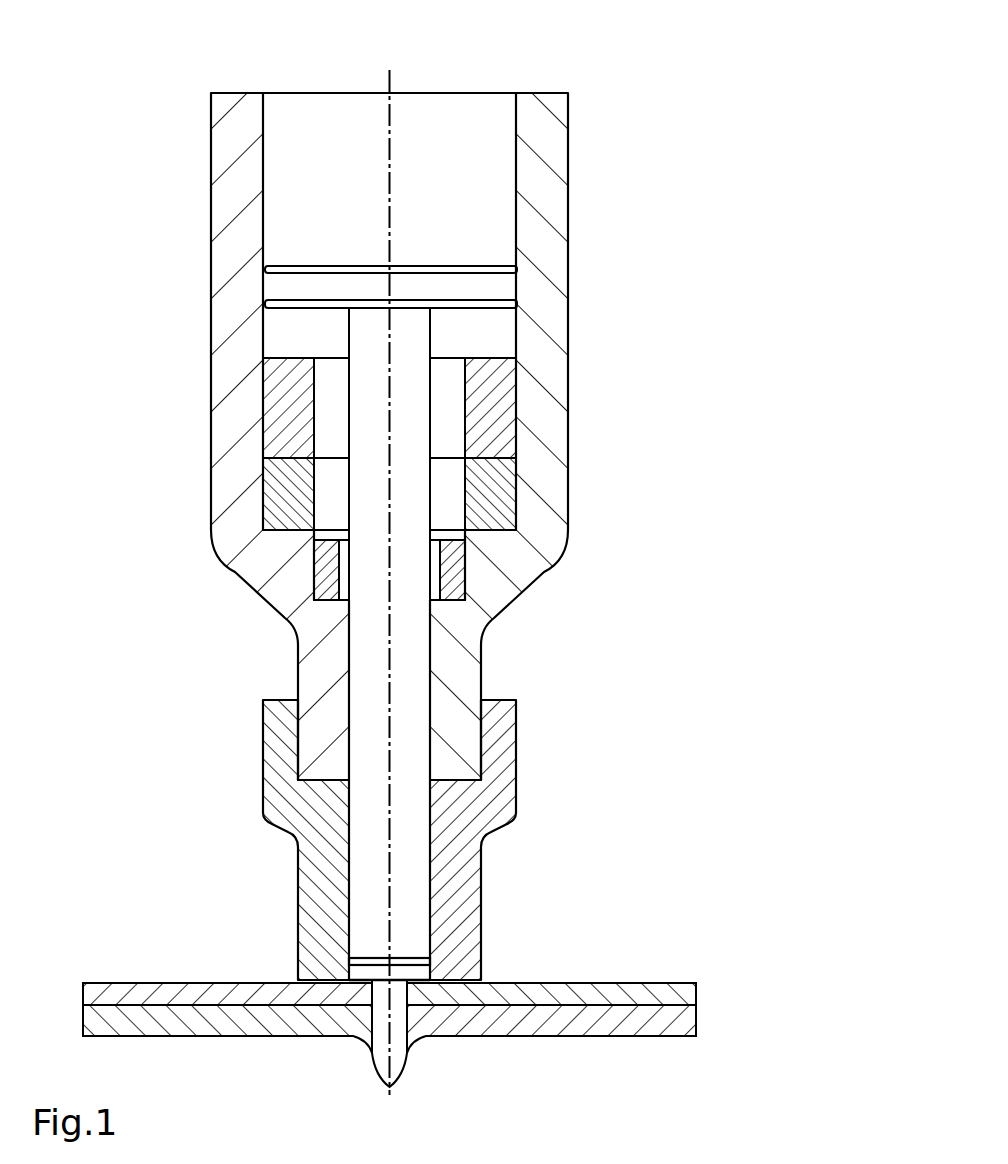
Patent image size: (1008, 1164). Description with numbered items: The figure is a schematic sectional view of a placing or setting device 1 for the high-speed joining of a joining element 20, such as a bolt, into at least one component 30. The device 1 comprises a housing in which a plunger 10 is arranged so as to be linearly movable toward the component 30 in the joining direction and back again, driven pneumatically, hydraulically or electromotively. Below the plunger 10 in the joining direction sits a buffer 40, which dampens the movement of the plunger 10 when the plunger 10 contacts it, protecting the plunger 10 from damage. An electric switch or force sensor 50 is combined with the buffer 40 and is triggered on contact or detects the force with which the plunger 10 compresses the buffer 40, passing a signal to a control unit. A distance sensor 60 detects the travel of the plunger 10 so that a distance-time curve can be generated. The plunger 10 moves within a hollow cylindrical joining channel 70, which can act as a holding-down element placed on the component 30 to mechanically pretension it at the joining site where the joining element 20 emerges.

The placing or setting device 1 is at (606, 45).
The plunger 10 is at (492, 287).
The joining element 20 is at (400, 1052).
The component 30 is at (657, 1008).
The buffer 40 is at (492, 405).
The electric switch or force sensor 50 is at (492, 487).
The distance sensor 60 is at (462, 557).
The joining channel 70 is at (472, 808).